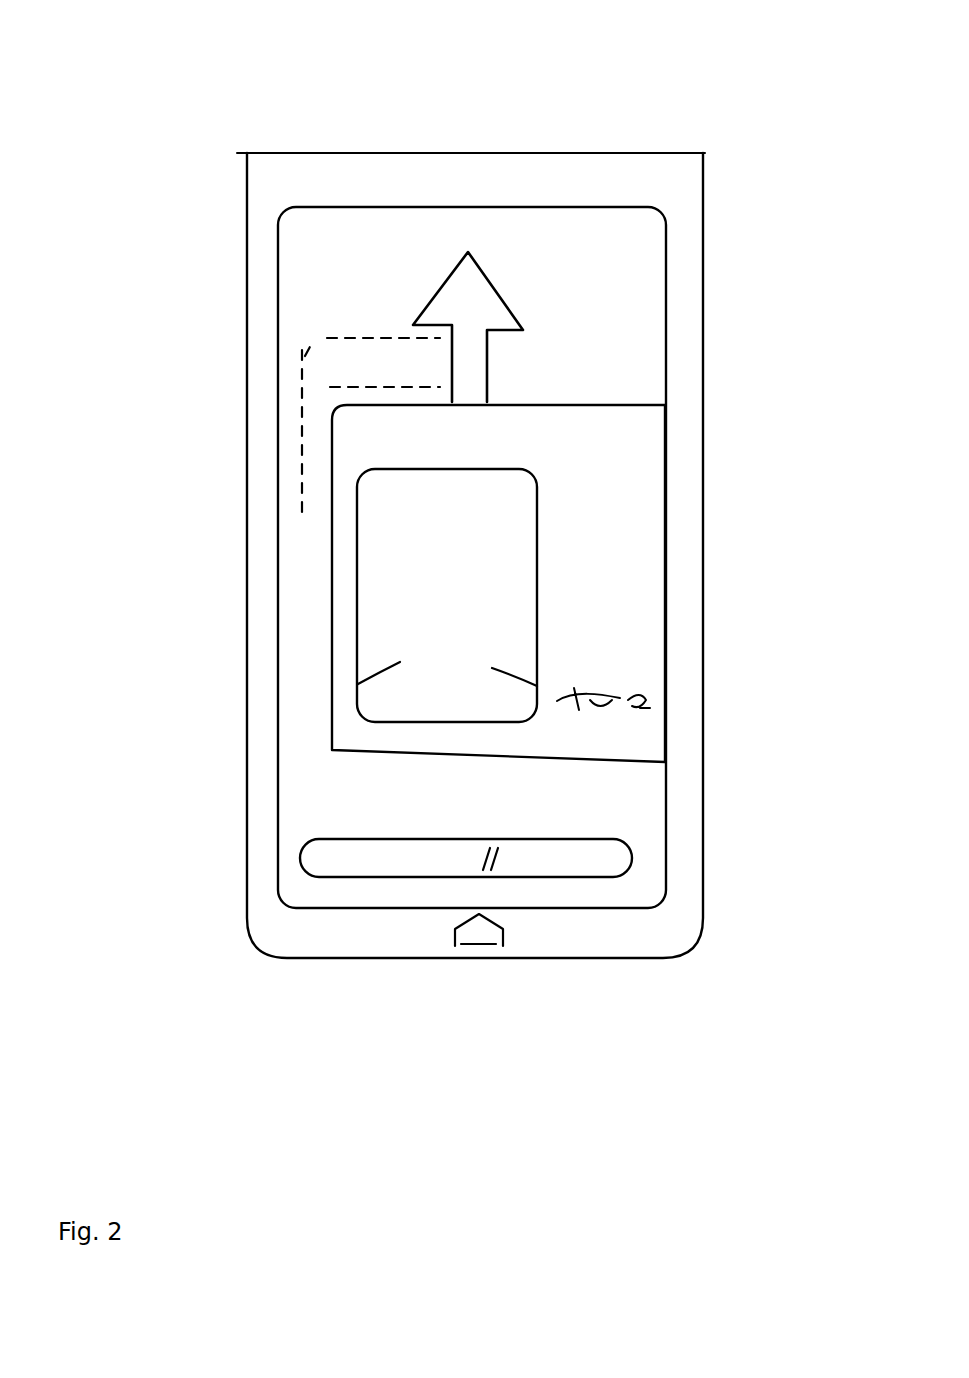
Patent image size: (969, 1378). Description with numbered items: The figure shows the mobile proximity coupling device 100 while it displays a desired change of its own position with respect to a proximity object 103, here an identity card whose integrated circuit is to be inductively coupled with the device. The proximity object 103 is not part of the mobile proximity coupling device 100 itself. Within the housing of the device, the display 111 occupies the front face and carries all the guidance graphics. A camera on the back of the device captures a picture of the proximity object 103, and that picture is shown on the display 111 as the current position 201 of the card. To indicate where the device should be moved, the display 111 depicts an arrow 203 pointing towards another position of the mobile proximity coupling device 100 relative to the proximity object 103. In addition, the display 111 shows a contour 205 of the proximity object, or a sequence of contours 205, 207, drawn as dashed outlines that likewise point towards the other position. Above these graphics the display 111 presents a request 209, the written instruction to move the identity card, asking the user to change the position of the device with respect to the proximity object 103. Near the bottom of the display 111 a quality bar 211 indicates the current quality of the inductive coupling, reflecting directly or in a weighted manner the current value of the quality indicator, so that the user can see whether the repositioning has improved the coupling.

The mobile proximity coupling device 100 is at (363, 943).
The proximity object 103 is at (650, 470).
The display 111 is at (641, 370).
The current position 201 is at (328, 735).
The arrow 203 is at (468, 250).
The contour 205 is at (298, 512).
The contour 207 is at (305, 350).
The request 209 is at (568, 243).
The quality bar 211 is at (323, 862).